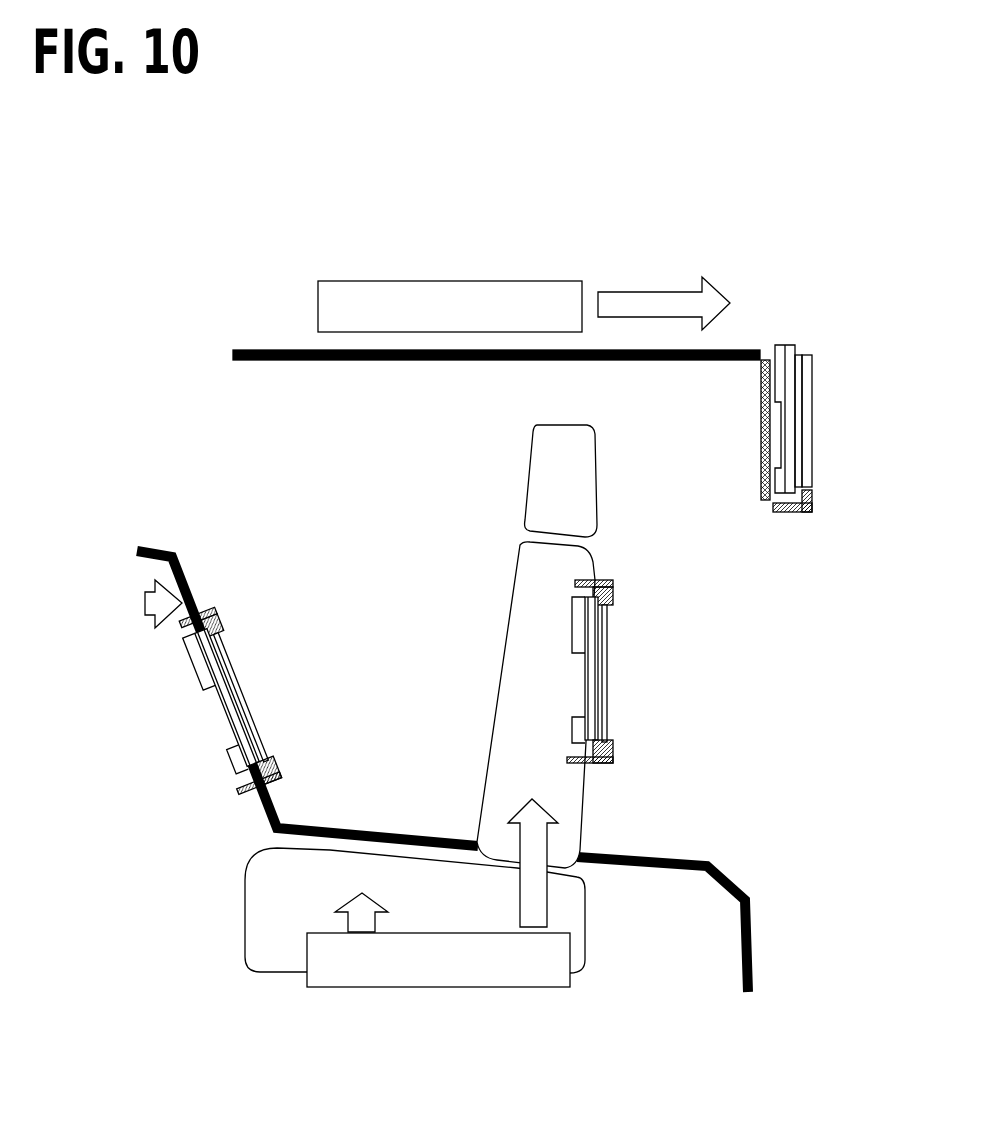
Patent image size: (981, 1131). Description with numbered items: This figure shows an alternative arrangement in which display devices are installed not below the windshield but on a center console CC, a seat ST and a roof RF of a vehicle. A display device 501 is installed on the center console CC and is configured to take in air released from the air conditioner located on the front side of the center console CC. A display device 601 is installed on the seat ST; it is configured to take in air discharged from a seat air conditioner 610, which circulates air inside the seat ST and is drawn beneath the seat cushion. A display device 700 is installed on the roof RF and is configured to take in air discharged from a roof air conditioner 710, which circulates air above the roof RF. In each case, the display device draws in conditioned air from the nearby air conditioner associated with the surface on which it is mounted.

The roof air conditioner 710 is at (487, 281).
The display device 700 is at (793, 513).
The display device 601 is at (612, 585).
The display device 501 is at (214, 603).
The seat air conditioner 610 is at (571, 956).
The roof RF is at (370, 361).
The seat ST is at (523, 677).
The center console CC is at (270, 802).